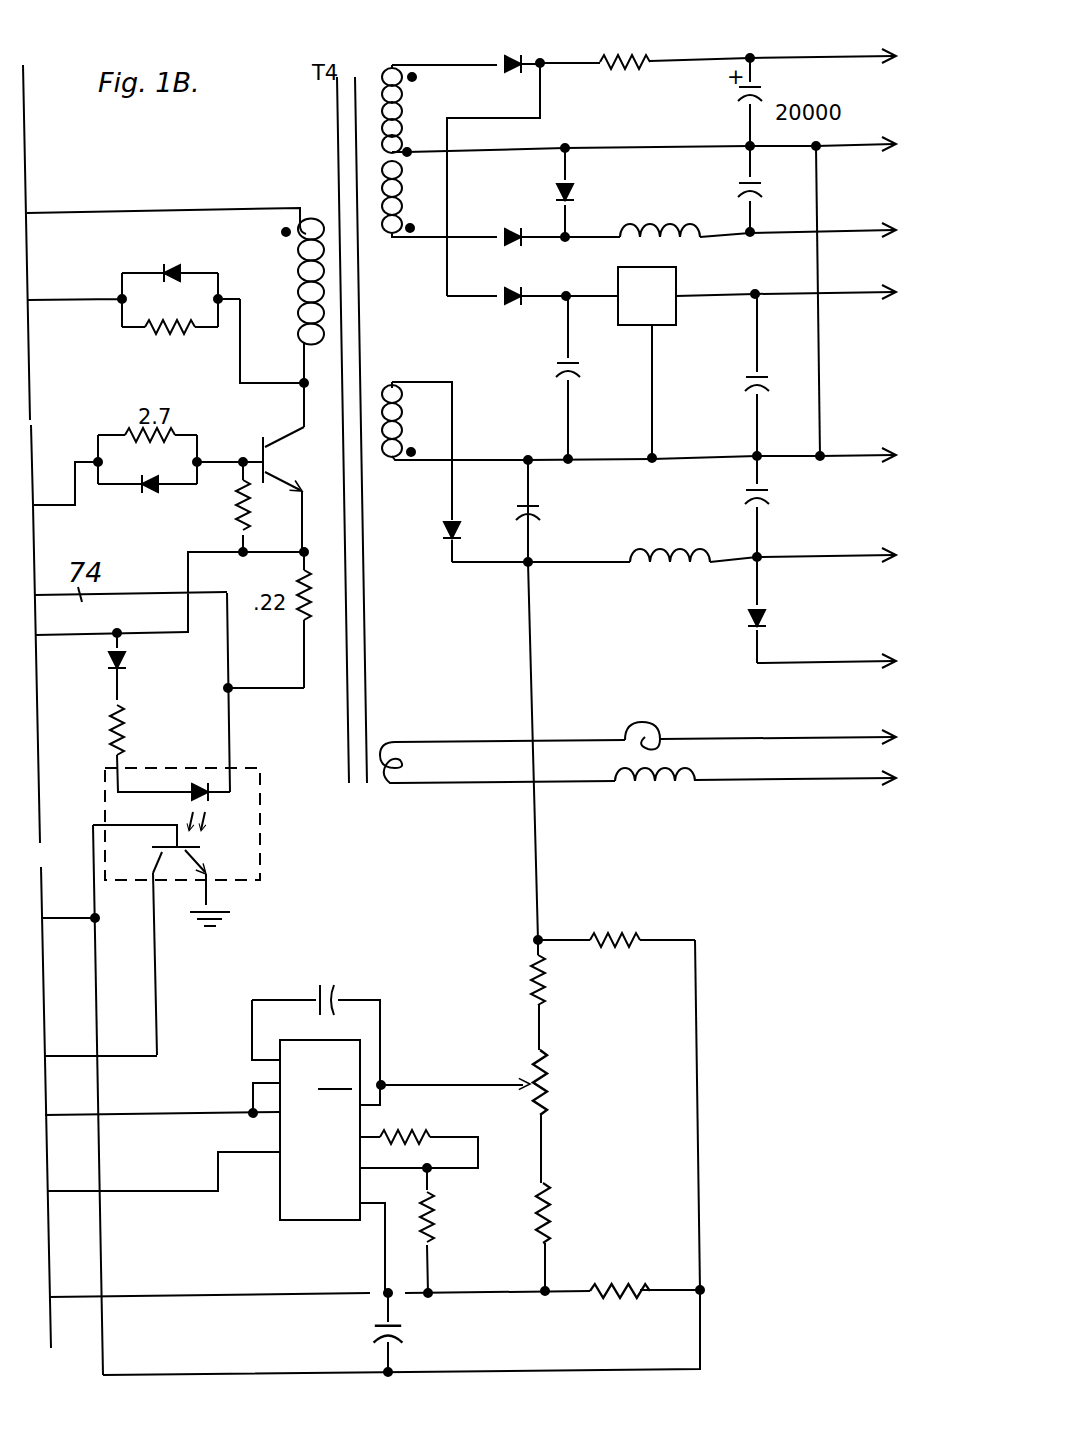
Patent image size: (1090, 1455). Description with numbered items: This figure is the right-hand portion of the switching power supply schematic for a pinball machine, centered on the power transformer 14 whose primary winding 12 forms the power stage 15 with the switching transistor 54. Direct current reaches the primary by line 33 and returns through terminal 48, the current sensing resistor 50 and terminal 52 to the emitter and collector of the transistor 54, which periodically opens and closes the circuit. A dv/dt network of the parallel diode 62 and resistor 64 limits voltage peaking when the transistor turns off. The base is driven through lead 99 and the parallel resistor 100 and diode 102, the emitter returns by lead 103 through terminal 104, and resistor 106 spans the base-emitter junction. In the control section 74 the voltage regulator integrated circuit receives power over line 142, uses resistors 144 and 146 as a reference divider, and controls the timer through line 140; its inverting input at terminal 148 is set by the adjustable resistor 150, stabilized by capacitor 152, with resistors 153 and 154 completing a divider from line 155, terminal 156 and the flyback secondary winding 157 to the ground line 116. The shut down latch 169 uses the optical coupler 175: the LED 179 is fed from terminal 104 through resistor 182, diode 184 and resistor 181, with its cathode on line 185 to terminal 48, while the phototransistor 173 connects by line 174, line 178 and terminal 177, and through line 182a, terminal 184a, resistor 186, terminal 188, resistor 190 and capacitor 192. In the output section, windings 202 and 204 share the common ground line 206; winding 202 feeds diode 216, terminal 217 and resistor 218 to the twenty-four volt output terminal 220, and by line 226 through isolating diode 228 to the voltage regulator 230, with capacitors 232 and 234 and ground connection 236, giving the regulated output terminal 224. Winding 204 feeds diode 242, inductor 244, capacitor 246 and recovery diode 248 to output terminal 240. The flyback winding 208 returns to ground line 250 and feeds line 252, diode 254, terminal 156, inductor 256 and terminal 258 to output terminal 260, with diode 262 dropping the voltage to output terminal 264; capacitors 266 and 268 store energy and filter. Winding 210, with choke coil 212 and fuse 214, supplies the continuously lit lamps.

The primary winding 12 is at (318, 226).
The power transformer 14 is at (332, 170).
The power stage 15 is at (208, 378).
The conductor 33 is at (93, 210).
The terminal 48 is at (232, 690).
The resistor 50 is at (302, 632).
The terminal 52 is at (300, 557).
The switching transistor 54 is at (275, 460).
The diode 62 is at (172, 268).
The resistor 64 is at (150, 333).
The control section 74 is at (330, 1266).
The lead 99 is at (50, 495).
The resistor 100 is at (132, 432).
The diode 102 is at (148, 492).
The lead 103 is at (70, 635).
The terminal 104 is at (112, 645).
The resistor 106 is at (240, 510).
The ground line 116 is at (152, 1296).
The line 140 is at (122, 1191).
The line 142 is at (142, 1116).
The resistor 144 is at (433, 1228).
The resistor 146 is at (425, 1145).
The terminal 148 is at (384, 1082).
The adjustable resistor 150 is at (548, 1108).
The capacitor 152 is at (315, 990).
The resistor 153 is at (536, 982).
The resistor 154 is at (550, 1222).
The line 155 is at (535, 842).
The terminal 156 is at (534, 566).
The flyback secondary winding 157 is at (505, 446).
The shut down latch 169 is at (172, 988).
The phototransistor 173 is at (170, 880).
The line 174 is at (110, 1060).
The optical coupler 175 is at (270, 828).
The terminal 177 is at (100, 920).
The line 178 is at (62, 915).
The LED 179 is at (193, 785).
The conductor 181 is at (112, 705).
The resistor 182 is at (128, 730).
The line 182a is at (178, 1374).
The diode 184 is at (128, 664).
The terminal 184a is at (702, 1290).
The line 185 is at (233, 745).
The resistor 186 is at (620, 946).
The terminal 188 is at (536, 940).
The resistor 190 is at (612, 1298).
The capacitor 192 is at (372, 1332).
The secondary winding 202 is at (400, 72).
The secondary winding 204 is at (406, 245).
The common ground line 206 is at (655, 146).
The secondary winding 208 is at (402, 380).
The secondary winding 210 is at (385, 790).
The radio frequency choke coil 212 is at (652, 790).
The fuse 214 is at (645, 735).
The diode 216 is at (505, 58).
The terminal 217 is at (542, 60).
The resistor 218 is at (642, 62).
The output terminal 220 is at (885, 52).
The output terminal 224 is at (885, 300).
The line 226 is at (542, 100).
The isolating diode 228 is at (508, 306).
The linear voltage regulator 230 is at (668, 314).
The capacitor 232 is at (556, 377).
The capacitor 234 is at (742, 383).
The ground connection 236 is at (645, 420).
The output terminal 240 is at (885, 236).
The diode 242 is at (506, 230).
The inductor 244 is at (660, 226).
The capacitor 246 is at (760, 190).
The recovery diode 248 is at (558, 190).
The ground line 250 is at (625, 465).
The line 252 is at (476, 568).
The diode 254 is at (444, 532).
The inductor 256 is at (665, 578).
The terminal 258 is at (762, 562).
The output terminal 260 is at (885, 568).
The diode 262 is at (772, 622).
The output terminal 264 is at (885, 670).
The capacitor 266 is at (545, 516).
The capacitor 268 is at (775, 496).